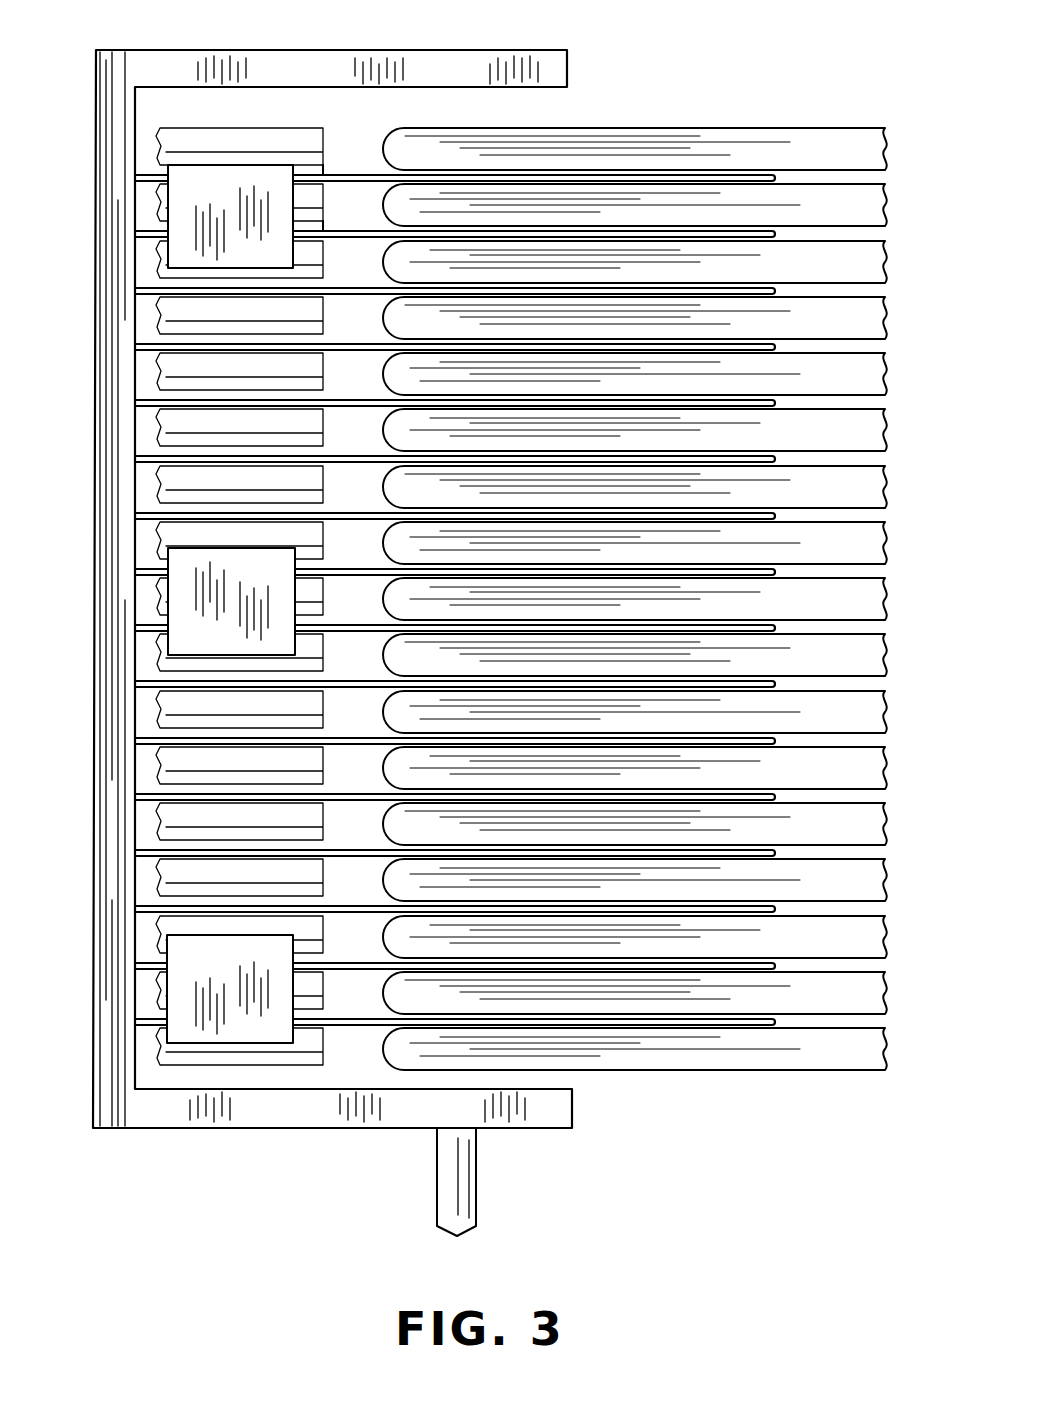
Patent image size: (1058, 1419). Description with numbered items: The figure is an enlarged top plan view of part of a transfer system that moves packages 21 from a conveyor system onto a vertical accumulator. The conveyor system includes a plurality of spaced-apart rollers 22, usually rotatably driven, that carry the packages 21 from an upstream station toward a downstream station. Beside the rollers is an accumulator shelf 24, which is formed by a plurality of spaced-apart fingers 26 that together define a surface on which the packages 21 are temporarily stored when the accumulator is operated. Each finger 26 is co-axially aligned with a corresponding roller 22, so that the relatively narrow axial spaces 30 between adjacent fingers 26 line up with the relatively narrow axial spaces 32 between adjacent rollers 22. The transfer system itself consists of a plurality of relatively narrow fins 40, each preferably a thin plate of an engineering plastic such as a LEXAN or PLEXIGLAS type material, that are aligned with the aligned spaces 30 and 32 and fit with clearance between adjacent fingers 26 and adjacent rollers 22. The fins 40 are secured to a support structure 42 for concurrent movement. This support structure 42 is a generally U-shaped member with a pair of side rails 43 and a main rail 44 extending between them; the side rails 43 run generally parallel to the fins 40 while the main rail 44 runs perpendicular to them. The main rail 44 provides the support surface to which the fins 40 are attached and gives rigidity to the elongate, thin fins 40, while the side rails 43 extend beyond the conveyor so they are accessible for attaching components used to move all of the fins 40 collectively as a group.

The package 21 is at (225, 200).
The roller 22 is at (183, 130).
The accumulator shelf 24 is at (740, 129).
The finger 26 is at (580, 132).
The axial space 30 is at (392, 172).
The axial space 32 is at (326, 171).
The fin 40 is at (333, 185).
The support structure 42 is at (225, 1129).
The side rail 43 is at (303, 54).
The main rail 44 is at (100, 1021).